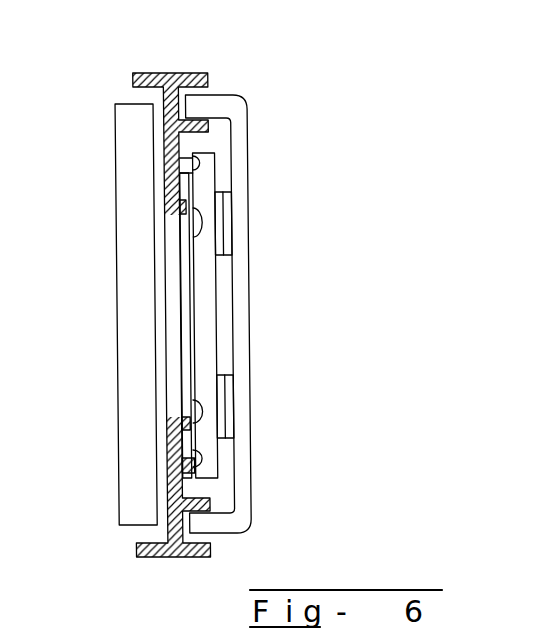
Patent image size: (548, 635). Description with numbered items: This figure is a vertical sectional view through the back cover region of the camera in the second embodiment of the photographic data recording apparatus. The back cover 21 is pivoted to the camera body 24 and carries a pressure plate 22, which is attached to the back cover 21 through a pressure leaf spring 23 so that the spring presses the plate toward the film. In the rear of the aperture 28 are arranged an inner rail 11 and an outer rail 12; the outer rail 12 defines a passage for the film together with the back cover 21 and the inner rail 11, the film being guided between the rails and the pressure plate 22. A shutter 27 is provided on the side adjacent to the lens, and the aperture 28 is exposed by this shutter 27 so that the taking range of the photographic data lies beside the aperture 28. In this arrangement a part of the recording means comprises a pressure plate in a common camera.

The inner rail 11 is at (192, 226).
The outer rail 12 is at (178, 160).
The back cover 21 is at (213, 98).
The pressure plate 22 is at (206, 327).
The pressure leaf spring 23 is at (216, 218).
The camera body 24 is at (189, 73).
The shutter 27 is at (122, 125).
The aperture 28 is at (183, 227).